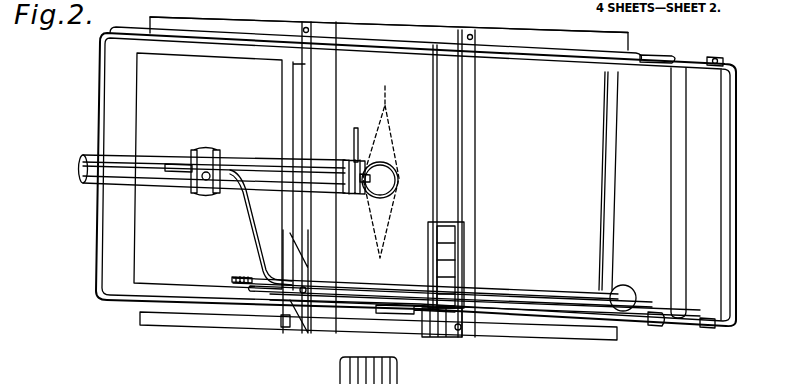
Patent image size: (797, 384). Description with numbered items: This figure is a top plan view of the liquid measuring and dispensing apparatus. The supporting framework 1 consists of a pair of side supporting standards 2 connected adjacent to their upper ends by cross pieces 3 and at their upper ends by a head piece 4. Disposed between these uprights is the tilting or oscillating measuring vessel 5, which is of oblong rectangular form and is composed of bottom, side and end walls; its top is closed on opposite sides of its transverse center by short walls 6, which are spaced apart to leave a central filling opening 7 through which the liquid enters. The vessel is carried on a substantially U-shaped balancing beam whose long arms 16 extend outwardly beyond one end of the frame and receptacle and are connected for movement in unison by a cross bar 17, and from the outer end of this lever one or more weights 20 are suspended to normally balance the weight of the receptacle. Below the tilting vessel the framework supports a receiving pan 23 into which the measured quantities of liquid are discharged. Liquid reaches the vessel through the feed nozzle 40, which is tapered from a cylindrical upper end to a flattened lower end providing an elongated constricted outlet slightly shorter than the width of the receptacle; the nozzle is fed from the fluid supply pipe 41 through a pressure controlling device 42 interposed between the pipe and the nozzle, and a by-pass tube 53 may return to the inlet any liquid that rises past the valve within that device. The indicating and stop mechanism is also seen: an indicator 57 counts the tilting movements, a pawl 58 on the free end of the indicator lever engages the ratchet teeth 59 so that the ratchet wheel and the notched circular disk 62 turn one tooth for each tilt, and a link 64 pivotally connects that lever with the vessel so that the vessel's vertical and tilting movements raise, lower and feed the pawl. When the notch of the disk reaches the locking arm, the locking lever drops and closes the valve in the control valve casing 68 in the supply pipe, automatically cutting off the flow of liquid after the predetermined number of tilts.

The supporting framework 1 is at (395, 26).
The side supporting standards 2 is at (177, 318).
The cross pieces 3 is at (303, 103).
The head piece 4 is at (423, 170).
The measuring vessel 5 is at (593, 180).
The short walls 6 is at (208, 88).
The central filling opening 7 is at (322, 93).
The long arms 16 is at (687, 62).
The cross bar 17 is at (727, 183).
The weights 20 is at (730, 60).
The receiving pan 23 is at (107, 305).
The feed nozzle 40 is at (381, 161).
The fluid supply pipe 41 is at (88, 185).
The pressure controlling device 42 is at (378, 192).
The by-pass tube 53 is at (343, 248).
The indicator 57 is at (467, 240).
The pawl 58 is at (307, 287).
The ratchet teeth 59 is at (260, 290).
The circular disk 62 is at (237, 277).
The link 64 is at (400, 313).
The control valve casing 68 is at (200, 193).